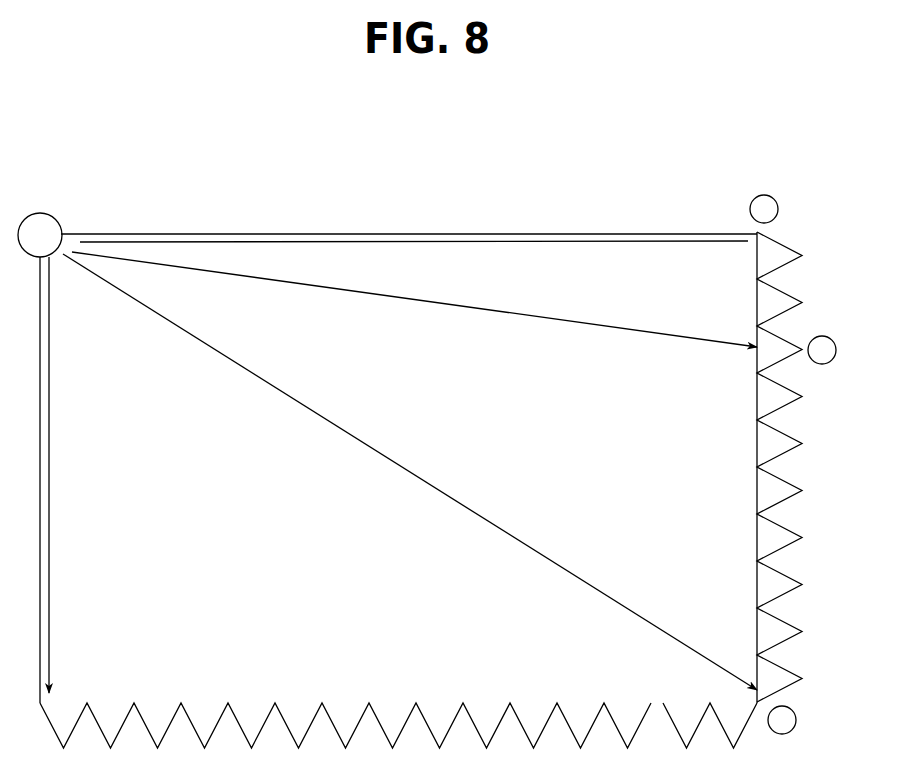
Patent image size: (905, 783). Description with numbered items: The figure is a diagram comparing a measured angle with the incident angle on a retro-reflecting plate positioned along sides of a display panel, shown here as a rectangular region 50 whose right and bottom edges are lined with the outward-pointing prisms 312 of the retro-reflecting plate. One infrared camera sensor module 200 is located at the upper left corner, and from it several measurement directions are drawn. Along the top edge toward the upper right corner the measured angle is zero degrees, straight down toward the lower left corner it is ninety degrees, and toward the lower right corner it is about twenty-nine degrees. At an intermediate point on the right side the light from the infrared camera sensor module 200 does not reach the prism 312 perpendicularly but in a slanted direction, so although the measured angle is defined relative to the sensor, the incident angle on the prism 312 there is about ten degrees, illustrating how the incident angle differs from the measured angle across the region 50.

The angle measurement frame 50 is at (359, 212).
The infrared camera sensor module 200 is at (39, 226).
The prism 312 is at (786, 257).